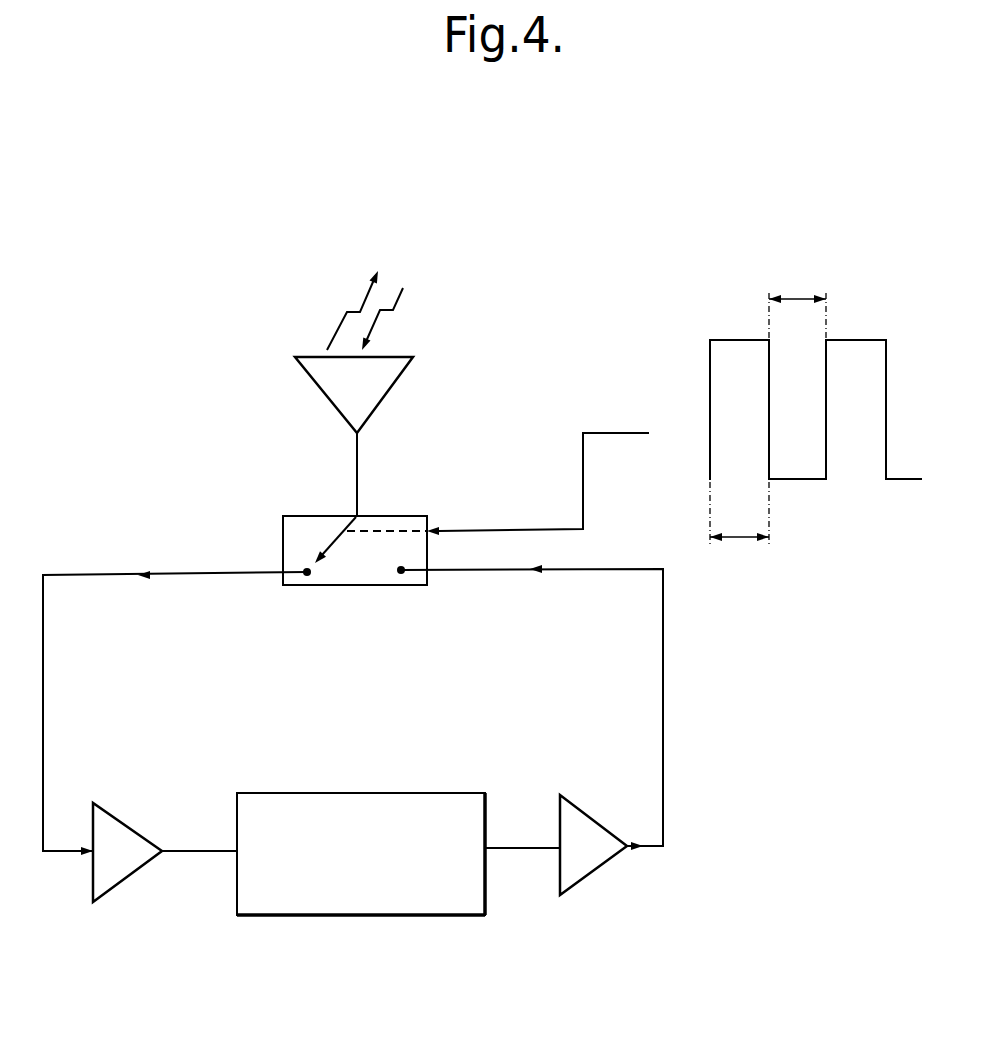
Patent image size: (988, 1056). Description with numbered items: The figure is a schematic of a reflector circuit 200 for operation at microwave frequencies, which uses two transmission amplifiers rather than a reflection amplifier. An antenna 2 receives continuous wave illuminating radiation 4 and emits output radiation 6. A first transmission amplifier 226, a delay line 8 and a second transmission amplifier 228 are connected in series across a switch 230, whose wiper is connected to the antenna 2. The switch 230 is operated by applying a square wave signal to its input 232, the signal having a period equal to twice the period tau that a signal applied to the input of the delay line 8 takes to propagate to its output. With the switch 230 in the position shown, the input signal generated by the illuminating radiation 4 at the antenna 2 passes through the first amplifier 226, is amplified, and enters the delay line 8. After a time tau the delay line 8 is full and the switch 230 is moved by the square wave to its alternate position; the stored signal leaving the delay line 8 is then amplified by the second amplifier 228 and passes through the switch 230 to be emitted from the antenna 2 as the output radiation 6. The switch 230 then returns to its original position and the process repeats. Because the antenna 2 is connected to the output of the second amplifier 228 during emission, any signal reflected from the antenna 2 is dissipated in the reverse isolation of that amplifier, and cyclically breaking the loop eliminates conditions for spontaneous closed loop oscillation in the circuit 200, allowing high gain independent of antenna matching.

The reflector circuit 200 is at (618, 252).
The antenna 2 is at (323, 377).
The illuminating radiation 4 is at (400, 298).
The output radiation 6 is at (343, 318).
The delay line 8 is at (455, 895).
The first transmission amplifier 226 is at (120, 870).
The second transmission amplifier 228 is at (588, 863).
The switch 230 is at (290, 539).
The switch input 232 is at (430, 527).